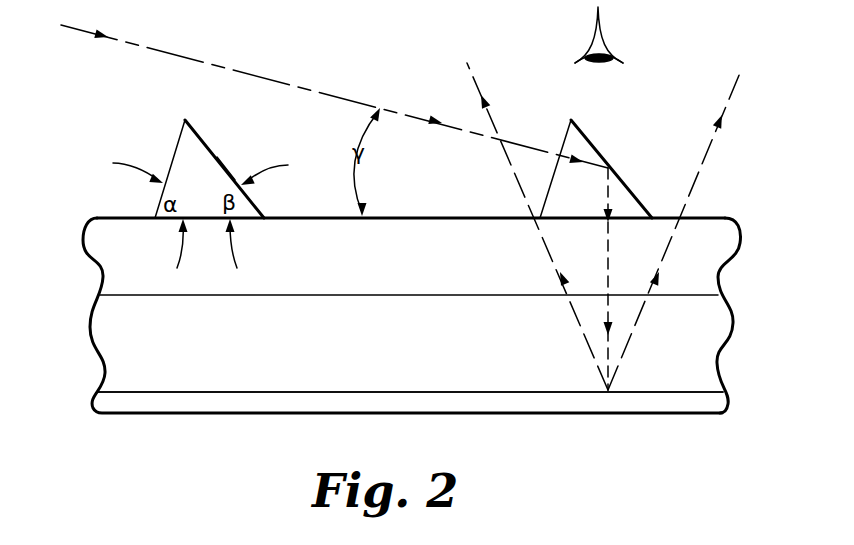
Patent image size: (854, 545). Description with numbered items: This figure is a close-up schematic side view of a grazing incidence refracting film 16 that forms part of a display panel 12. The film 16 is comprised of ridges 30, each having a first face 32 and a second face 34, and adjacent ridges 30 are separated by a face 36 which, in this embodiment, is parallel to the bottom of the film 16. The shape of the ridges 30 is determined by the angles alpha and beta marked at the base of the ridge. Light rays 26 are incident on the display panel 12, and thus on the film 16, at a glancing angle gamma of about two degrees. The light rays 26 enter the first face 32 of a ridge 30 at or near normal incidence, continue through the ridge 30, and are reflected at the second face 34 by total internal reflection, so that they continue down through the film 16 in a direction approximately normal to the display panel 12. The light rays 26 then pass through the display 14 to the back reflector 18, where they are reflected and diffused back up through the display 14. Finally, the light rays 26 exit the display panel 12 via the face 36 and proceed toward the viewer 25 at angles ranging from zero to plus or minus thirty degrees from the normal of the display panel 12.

The display panel 12 is at (260, 419).
The display 14 is at (107, 338).
The film 16 is at (97, 235).
The back reflector 18 is at (132, 402).
The viewer 25 is at (605, 23).
The light rays 26 is at (195, 58).
The ridges 30 is at (203, 123).
The first face 32 is at (172, 150).
The second face 34 is at (217, 157).
The face 36 is at (445, 217).